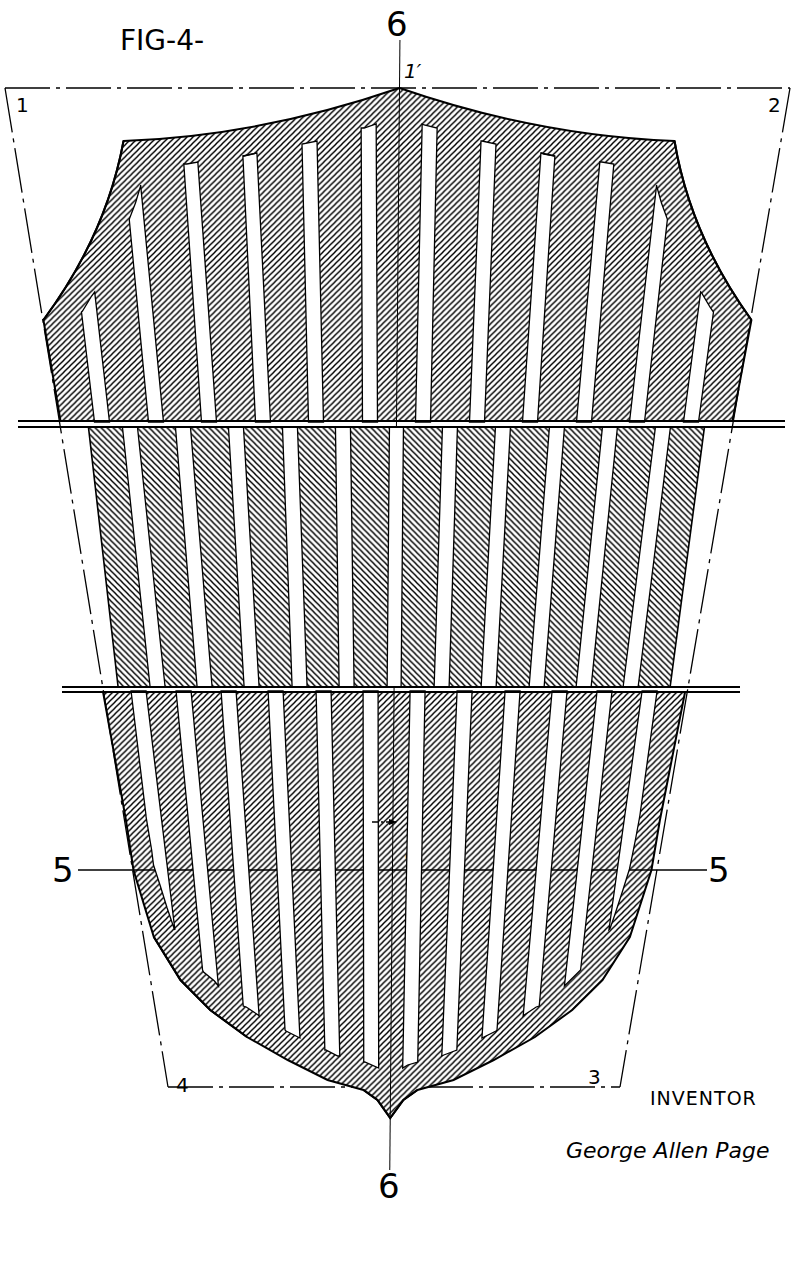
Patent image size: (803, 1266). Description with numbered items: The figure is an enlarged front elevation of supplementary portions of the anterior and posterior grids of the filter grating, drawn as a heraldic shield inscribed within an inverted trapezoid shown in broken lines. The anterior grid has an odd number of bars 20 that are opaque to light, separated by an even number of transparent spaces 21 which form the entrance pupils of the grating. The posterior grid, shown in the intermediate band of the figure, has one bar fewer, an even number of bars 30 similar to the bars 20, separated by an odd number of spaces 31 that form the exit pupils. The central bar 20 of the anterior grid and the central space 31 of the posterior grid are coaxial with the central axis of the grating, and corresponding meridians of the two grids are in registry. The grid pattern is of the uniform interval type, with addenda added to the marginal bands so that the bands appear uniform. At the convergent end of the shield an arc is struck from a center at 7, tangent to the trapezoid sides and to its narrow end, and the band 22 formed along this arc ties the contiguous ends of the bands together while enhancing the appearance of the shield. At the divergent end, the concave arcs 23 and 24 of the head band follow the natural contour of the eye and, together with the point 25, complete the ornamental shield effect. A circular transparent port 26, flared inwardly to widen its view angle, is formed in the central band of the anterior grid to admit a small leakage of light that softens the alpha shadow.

The bars of anterior grid 20 is at (401, 603).
The transparent spaces of anterior grid 21 is at (395, 603).
The arc band 22 is at (200, 991).
The concave arc of head band 23 is at (398, 230).
The concave arc of head band 24 is at (404, 129).
The point 25 is at (402, 1104).
The transparent port 26 is at (375, 897).
The center of convergent-end arc 7 is at (398, 809).
The bars of posterior grid 30 is at (397, 557).
The spaces of posterior grid 31 is at (395, 557).